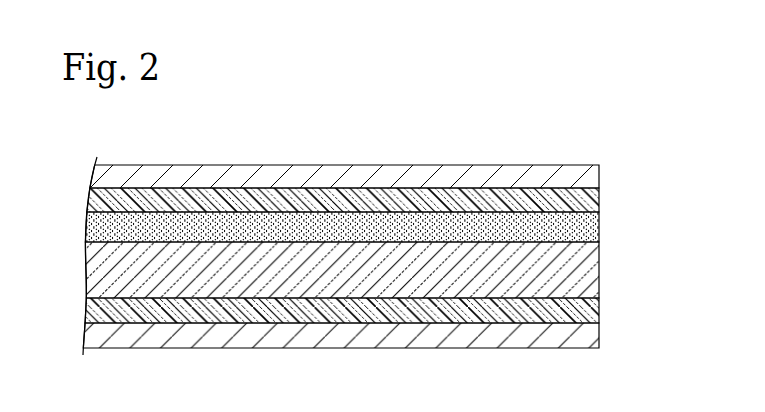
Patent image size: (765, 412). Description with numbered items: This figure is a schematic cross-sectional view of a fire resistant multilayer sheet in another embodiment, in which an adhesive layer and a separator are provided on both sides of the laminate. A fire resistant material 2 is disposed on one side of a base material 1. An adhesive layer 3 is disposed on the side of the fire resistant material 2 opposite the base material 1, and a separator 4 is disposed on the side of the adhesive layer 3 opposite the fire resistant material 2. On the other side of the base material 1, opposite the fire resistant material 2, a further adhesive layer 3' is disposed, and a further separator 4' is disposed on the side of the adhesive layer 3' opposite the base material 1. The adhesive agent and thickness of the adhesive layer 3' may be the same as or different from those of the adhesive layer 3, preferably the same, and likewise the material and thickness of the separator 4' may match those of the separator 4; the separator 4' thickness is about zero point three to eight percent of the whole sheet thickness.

The base material 1 is at (599, 220).
The fire resistant material 2 is at (599, 268).
The adhesive layer 3 is at (379, 311).
The separator 4 is at (375, 341).
The adhesive layer 3' is at (384, 191).
The separator 4' is at (382, 156).